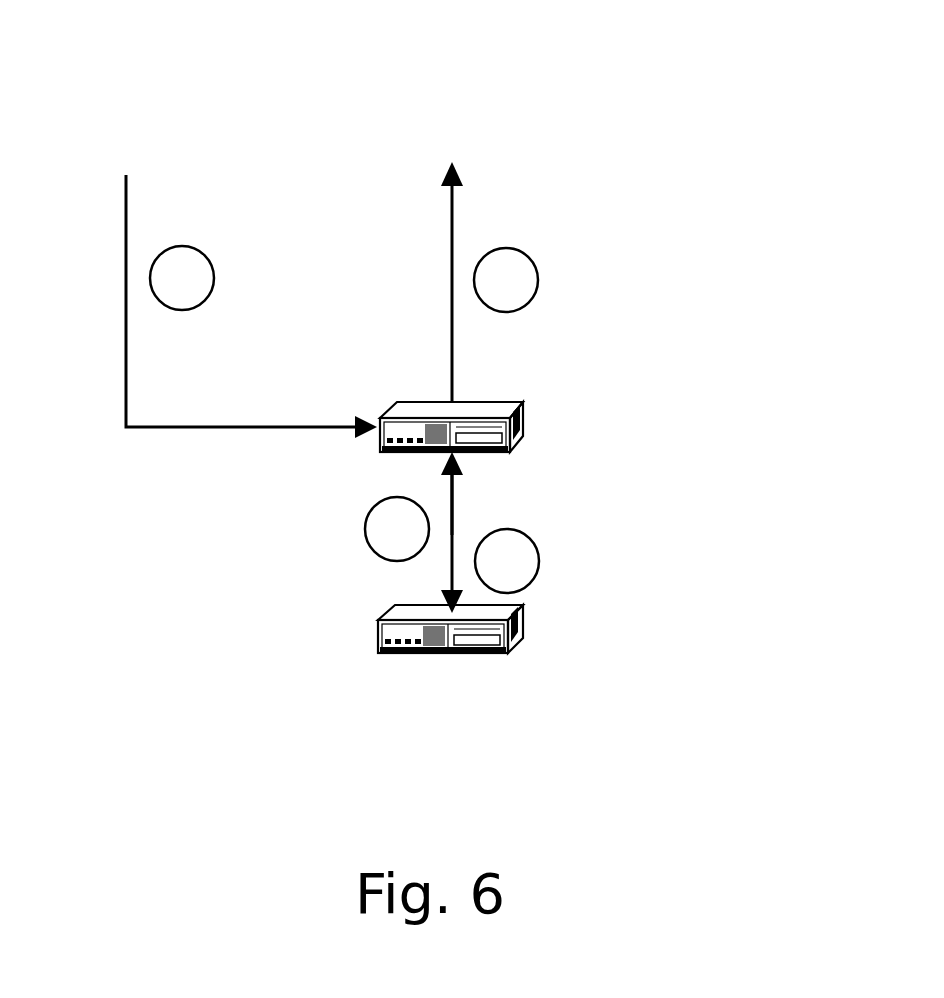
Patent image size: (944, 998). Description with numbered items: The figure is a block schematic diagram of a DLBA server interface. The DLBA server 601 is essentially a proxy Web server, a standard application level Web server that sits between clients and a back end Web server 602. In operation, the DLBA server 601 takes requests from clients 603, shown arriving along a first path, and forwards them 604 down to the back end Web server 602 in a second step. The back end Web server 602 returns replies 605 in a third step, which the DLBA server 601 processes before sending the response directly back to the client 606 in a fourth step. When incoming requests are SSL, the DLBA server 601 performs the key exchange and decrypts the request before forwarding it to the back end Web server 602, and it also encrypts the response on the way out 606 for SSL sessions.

The DLBA server 601 is at (527, 413).
The back end Web server 602 is at (375, 665).
The requests from clients 603 is at (198, 237).
The forwarding of requests 604 is at (352, 537).
The replies from back end Web servers 605 is at (537, 563).
The response to client 606 is at (528, 235).